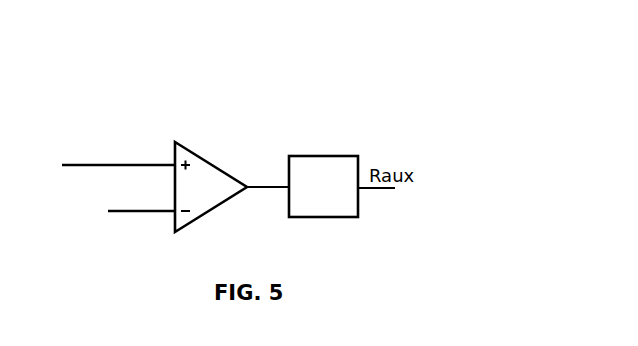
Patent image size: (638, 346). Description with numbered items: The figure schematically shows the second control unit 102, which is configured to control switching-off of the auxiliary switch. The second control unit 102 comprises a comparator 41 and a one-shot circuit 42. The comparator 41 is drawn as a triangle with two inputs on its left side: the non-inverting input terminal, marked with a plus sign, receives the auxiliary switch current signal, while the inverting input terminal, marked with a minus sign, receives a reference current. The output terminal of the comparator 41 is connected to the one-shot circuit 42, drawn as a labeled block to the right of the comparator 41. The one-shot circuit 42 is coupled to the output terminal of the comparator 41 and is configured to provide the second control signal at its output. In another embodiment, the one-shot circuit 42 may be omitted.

The comparator 41 is at (154, 191).
The 1-shot circuit 42 is at (323, 174).
The second control unit 102 is at (351, 120).